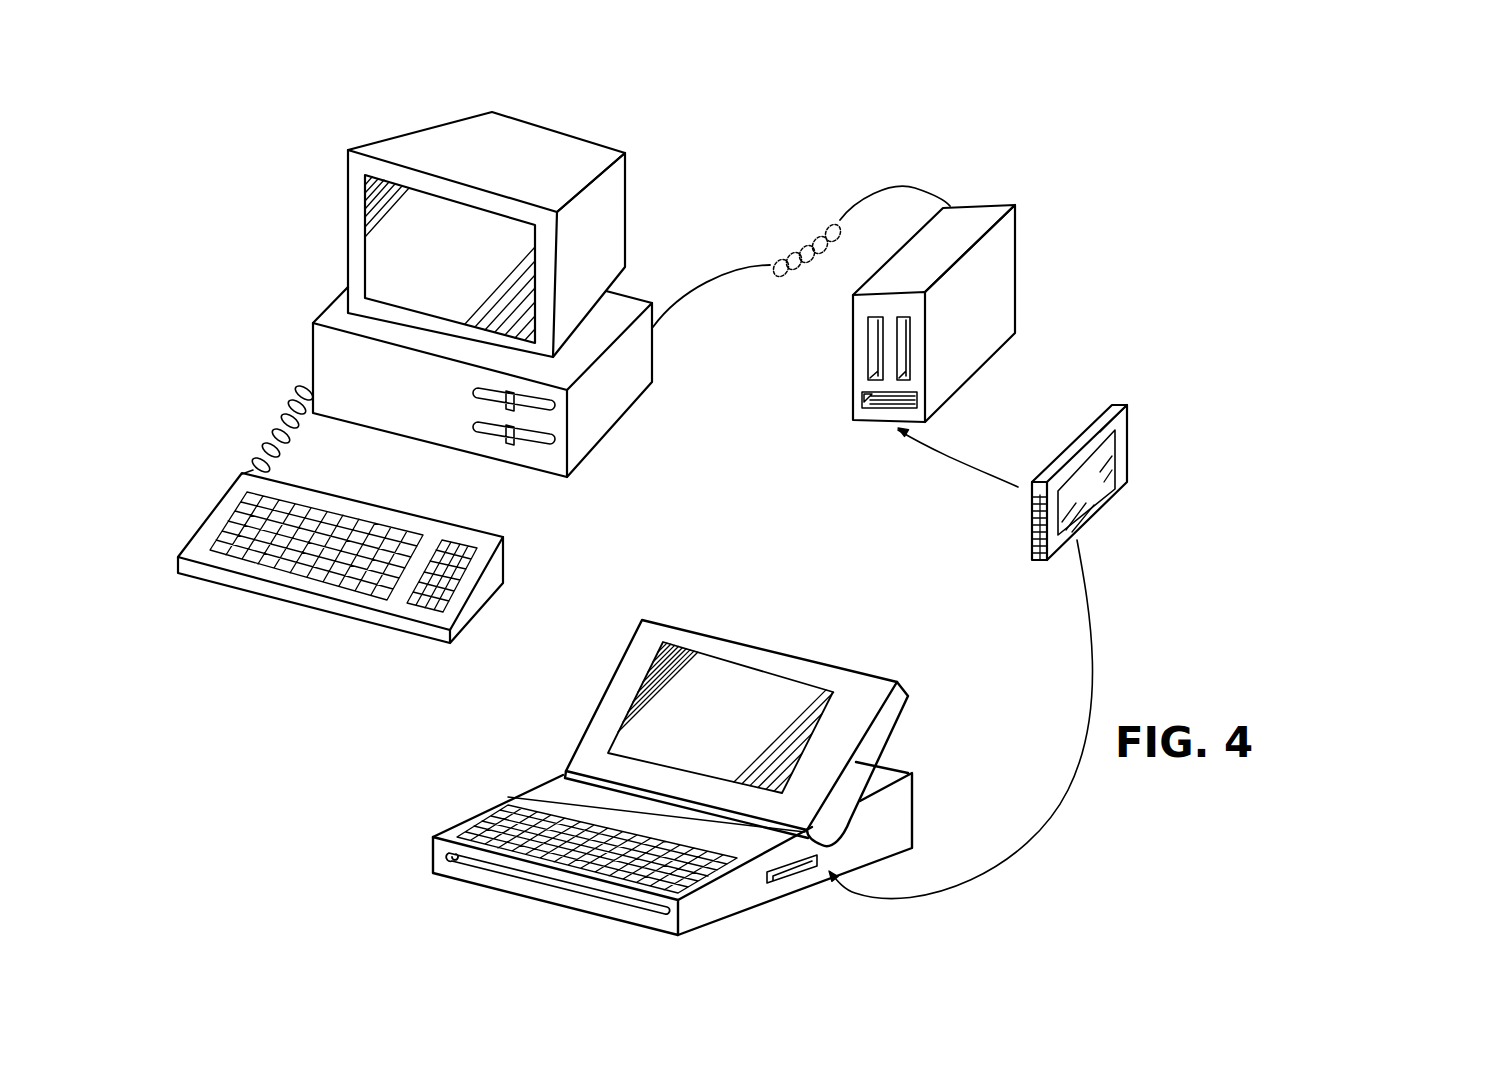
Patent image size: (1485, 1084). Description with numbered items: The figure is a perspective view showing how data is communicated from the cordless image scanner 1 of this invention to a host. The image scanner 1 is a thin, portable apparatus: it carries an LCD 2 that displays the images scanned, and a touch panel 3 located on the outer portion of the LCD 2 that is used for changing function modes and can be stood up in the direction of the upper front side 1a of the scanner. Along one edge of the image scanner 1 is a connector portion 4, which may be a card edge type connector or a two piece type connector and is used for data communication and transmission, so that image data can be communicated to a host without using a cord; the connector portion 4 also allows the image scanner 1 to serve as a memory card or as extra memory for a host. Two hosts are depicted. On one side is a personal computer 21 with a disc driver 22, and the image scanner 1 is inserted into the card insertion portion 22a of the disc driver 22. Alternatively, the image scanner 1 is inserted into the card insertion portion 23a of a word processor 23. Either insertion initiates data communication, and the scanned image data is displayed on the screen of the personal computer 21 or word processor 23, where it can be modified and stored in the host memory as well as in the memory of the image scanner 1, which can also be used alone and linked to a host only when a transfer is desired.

The image scanner 1 is at (1140, 400).
The upper front side 1a is at (1113, 446).
The LCD 2 is at (1078, 496).
The touch panel 3 is at (1118, 482).
The connector portion 4 is at (1032, 527).
The personal computer 21 is at (417, 122).
The disc driver 22 is at (852, 320).
The card insertion portion 22a is at (862, 403).
The word processor 23 is at (659, 620).
The card insertion portion 23a is at (790, 870).